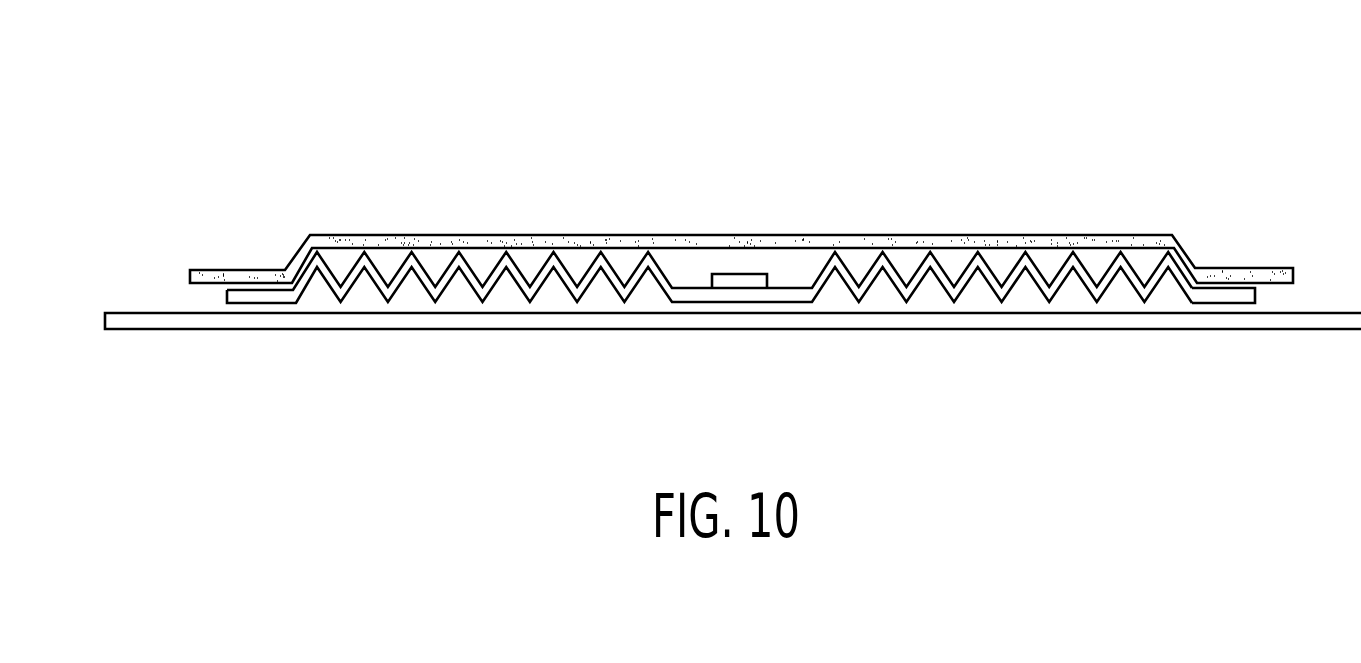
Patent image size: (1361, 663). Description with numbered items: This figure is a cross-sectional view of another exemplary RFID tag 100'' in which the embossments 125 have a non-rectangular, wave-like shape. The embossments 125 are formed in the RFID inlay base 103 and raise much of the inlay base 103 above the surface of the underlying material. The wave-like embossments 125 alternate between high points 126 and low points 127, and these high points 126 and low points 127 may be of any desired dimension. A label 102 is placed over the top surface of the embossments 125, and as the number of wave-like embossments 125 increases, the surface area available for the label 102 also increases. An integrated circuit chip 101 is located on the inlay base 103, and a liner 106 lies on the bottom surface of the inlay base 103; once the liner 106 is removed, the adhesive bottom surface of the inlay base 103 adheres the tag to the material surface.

The RFID tag 100'' is at (733, 217).
The integrated circuit chip 101 is at (739, 270).
The label 102 is at (336, 231).
The RFID inlay base 103 is at (1230, 297).
The liner 106 is at (179, 324).
The embossments 125 is at (1009, 267).
The high points 126 is at (1072, 252).
The low points 127 is at (1097, 302).